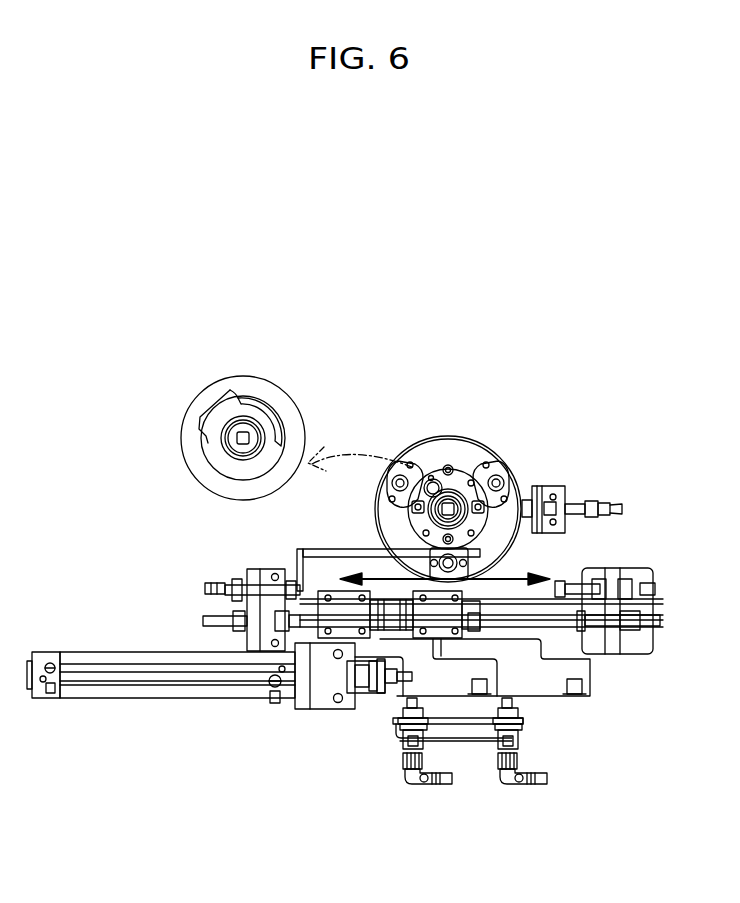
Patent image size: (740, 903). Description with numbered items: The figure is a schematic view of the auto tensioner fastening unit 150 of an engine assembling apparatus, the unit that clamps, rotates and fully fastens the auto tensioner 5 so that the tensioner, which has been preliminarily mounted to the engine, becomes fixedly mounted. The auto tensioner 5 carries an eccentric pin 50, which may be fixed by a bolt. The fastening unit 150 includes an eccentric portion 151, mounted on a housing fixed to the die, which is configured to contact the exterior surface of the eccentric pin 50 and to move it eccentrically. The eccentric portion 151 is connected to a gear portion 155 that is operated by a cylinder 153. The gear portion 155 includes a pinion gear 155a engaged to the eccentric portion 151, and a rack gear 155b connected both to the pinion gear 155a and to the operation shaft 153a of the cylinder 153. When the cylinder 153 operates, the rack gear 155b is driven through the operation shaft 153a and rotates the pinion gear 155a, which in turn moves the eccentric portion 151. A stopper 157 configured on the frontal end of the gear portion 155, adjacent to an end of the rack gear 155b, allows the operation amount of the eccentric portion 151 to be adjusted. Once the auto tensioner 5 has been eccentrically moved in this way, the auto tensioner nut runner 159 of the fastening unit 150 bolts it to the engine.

The auto tensioner 5 is at (183, 432).
The eccentric pin 50 is at (212, 412).
The auto tensioner fastening unit 150 is at (304, 322).
The eccentric portion 151 is at (442, 468).
The cylinder 153 is at (128, 698).
The operation shaft 153a is at (388, 682).
The gear portion 155 is at (403, 644).
The pinion gear 155a is at (432, 490).
The rack gear 155b is at (328, 550).
The stopper 157 is at (643, 622).
The auto tensioner nut runner 159 is at (457, 495).